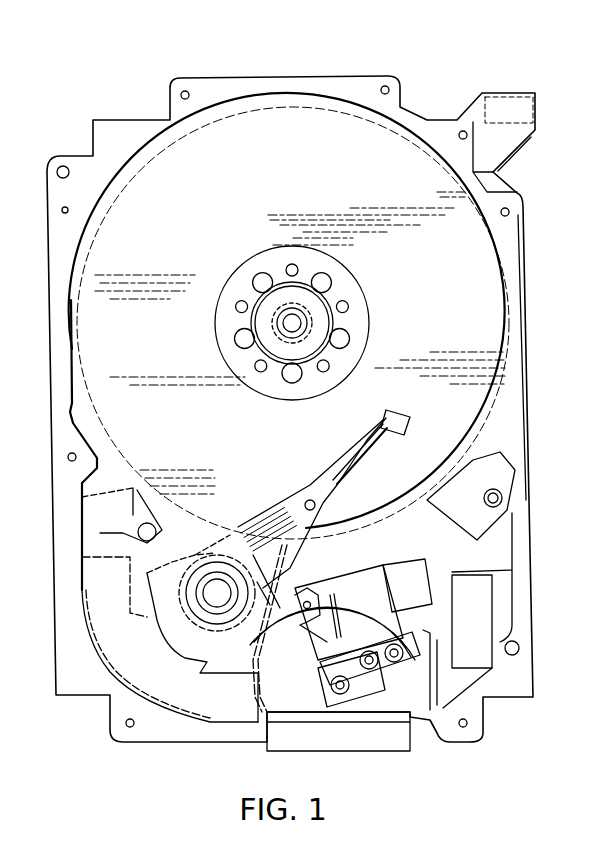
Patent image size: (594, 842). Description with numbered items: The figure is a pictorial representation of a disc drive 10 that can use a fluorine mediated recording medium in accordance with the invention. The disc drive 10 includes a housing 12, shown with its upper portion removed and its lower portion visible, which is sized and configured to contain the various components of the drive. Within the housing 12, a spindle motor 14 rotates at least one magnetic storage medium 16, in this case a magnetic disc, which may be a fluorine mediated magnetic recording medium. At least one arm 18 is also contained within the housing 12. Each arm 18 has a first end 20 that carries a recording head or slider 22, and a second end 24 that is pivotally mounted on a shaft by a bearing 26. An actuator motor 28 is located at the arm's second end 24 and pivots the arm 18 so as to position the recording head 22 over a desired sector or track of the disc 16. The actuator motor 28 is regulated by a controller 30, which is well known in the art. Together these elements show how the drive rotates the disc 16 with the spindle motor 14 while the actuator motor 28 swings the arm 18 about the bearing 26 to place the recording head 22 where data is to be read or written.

The disc drive 10 is at (287, 397).
The housing 12 is at (372, 76).
The spindle motor 14 is at (283, 323).
The magnetic storage medium 16 is at (218, 193).
The arm 18 is at (288, 516).
The first end 20 is at (360, 444).
The recording head 22 is at (406, 413).
The second end 24 is at (230, 552).
The bearing 26 is at (214, 588).
The actuator motor 28 is at (170, 605).
The controller 30 is at (464, 608).